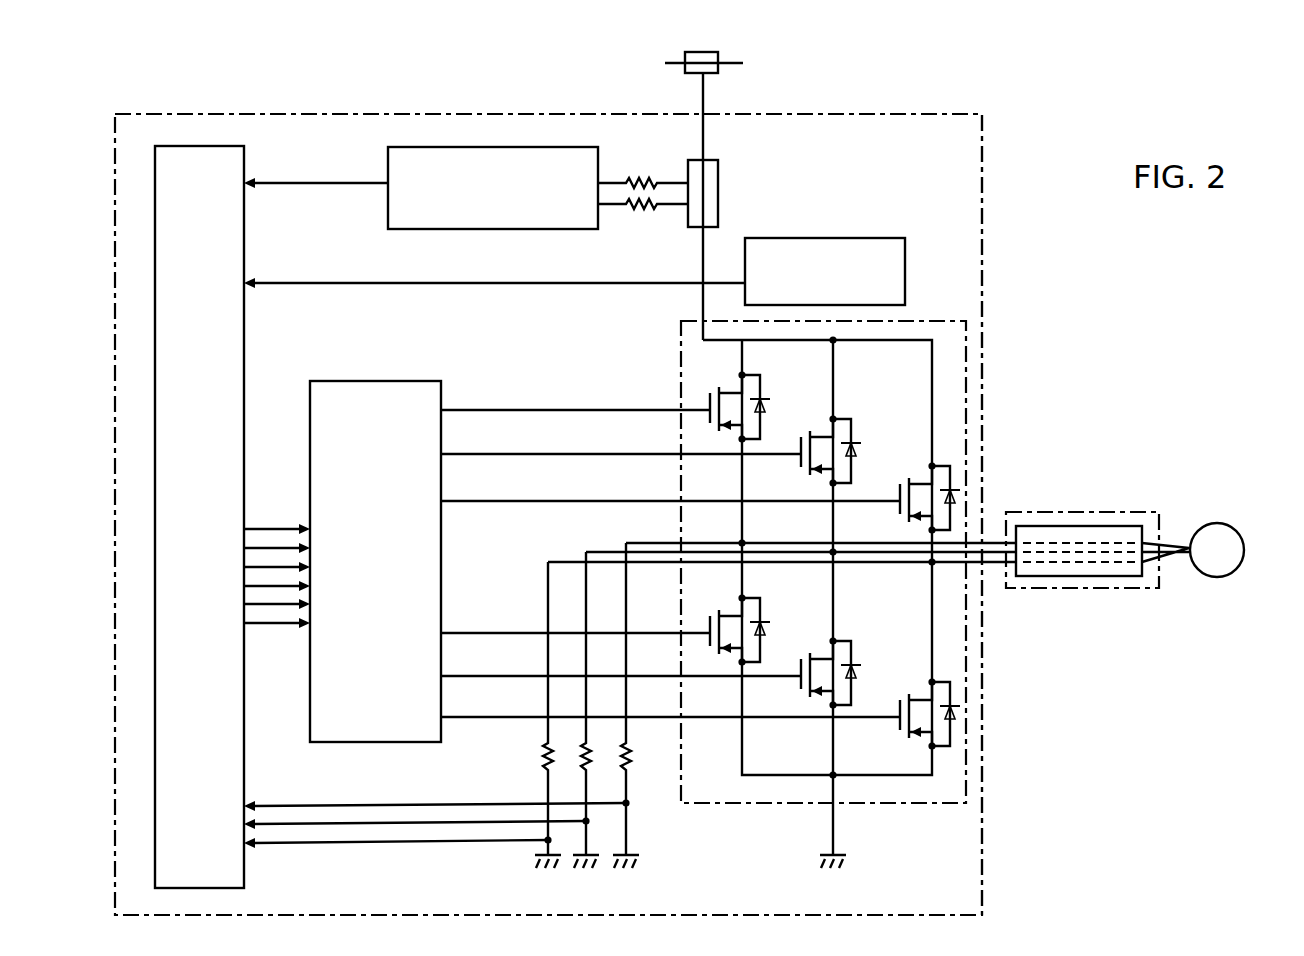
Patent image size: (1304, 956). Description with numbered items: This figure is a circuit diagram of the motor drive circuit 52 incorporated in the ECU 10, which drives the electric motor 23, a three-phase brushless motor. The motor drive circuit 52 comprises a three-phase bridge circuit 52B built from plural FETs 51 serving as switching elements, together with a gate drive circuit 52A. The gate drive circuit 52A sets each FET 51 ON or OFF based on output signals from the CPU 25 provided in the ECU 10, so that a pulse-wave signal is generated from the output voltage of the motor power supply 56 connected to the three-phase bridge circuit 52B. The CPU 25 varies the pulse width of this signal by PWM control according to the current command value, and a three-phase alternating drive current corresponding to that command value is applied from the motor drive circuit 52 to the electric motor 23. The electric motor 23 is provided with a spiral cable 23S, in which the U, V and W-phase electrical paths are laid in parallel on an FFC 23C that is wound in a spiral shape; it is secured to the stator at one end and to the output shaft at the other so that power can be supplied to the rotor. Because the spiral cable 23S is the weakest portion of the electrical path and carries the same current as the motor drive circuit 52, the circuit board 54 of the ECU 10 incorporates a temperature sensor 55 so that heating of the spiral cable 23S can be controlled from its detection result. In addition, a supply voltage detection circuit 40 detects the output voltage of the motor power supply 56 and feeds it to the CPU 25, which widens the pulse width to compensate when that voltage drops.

The ECU 10 is at (1024, 126).
The electric motor 23 is at (1226, 523).
The FFC (flexible flat cable) 23C is at (1117, 576).
The spiral cable 23S is at (1134, 502).
The CPU 25 is at (243, 352).
The supply voltage detection circuit 40 is at (496, 147).
The FET 51 is at (942, 748).
The motor drive circuit 52 is at (605, 582).
The gate drive circuit 52A is at (441, 399).
The three-phase bridge circuit 52B is at (762, 594).
The circuit board 54 is at (981, 188).
The temperature sensor 55 is at (813, 238).
The motor power supply 56 is at (708, 52).